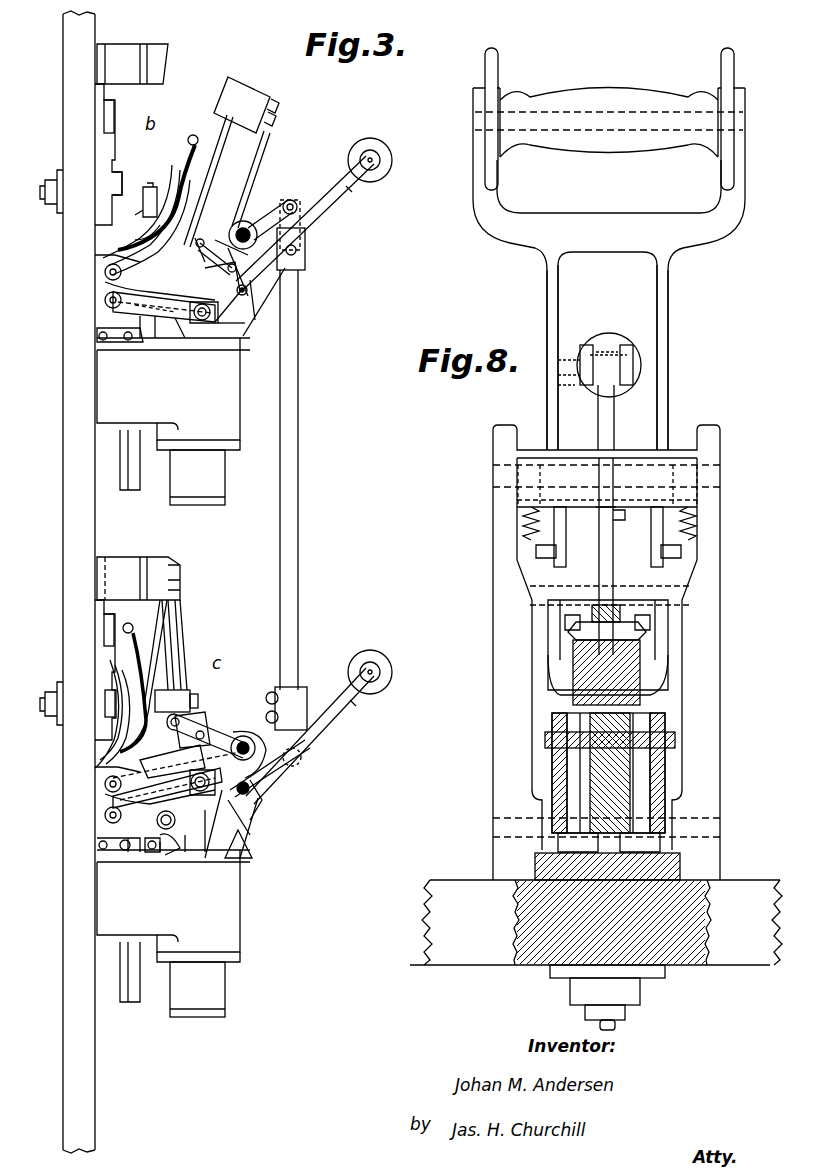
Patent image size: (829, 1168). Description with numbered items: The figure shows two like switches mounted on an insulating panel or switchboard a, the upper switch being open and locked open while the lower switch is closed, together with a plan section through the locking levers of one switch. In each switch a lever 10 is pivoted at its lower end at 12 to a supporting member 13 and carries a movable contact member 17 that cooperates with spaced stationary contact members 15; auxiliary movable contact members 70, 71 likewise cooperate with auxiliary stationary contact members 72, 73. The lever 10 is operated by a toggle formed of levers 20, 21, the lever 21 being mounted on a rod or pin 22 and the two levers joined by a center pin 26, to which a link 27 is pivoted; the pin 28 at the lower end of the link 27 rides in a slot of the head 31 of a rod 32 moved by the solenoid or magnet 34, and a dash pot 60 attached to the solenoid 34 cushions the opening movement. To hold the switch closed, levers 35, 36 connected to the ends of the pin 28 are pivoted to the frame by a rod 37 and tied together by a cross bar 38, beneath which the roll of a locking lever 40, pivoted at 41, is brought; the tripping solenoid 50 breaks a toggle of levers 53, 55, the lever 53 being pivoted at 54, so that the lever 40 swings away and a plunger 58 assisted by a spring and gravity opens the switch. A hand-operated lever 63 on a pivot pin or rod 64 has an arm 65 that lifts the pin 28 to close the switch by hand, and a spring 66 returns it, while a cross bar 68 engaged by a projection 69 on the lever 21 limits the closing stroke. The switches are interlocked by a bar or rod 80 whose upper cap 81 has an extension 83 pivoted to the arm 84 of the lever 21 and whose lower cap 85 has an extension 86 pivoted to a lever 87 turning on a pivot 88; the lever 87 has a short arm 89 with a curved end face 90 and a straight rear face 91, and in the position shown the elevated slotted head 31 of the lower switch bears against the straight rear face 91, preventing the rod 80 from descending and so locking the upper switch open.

In FIG. 3, the lever 10 is at (237, 162).
In FIG. 8, the lever 10 is at (575, 697).
In FIG. 3, the pivot 12 is at (105, 275).
In FIG. 8, the pivot 12 is at (720, 830).
In FIG. 3, the supporting member 13 is at (100, 296).
In FIG. 3, the stationary contact members 15 is at (95, 150).
In FIG. 3, the movable contact member 17 is at (170, 170).
In FIG. 8, the movable contact member 17 is at (552, 785).
In FIG. 3, the toggle lever 20 is at (205, 262).
In FIG. 8, the toggle lever 20 is at (570, 612).
In FIG. 3, the toggle lever 21 is at (235, 222).
In FIG. 8, the toggle lever 21 is at (599, 522).
In FIG. 3, the rod or pin 22 is at (246, 221).
In FIG. 8, the rod or pin 22 is at (493, 480).
In FIG. 3, the center pin 26 is at (207, 503).
In FIG. 8, the center pin 26 is at (650, 615).
In FIG. 3, the link 27 is at (200, 297).
In FIG. 3, the pin 28 is at (200, 327).
In FIG. 3, the slotted head 31 is at (190, 520).
In FIG. 8, the slotted head 31 is at (625, 558).
In FIG. 3, the rod 32 is at (170, 830).
In FIG. 3, the solenoid or magnet 34 is at (225, 405).
In FIG. 8, the lever 35 is at (545, 655).
In FIG. 3, the lever 36 is at (180, 345).
In FIG. 8, the lever 36 is at (672, 728).
In FIG. 3, the rod 37 is at (105, 310).
In FIG. 3, the cross bar 38 is at (167, 556).
In FIG. 8, the cross bar 38 is at (645, 712).
In FIG. 3, the locking lever 40 is at (150, 858).
In FIG. 3, the pivot 41 is at (158, 345).
In FIG. 3, the tripping solenoid 50 is at (105, 433).
In FIG. 3, the toggle lever 53 is at (113, 345).
In FIG. 3, the pivot 54 is at (98, 338).
In FIG. 3, the toggle lever 55 is at (143, 345).
In FIG. 3, the plunger 58 is at (115, 182).
In FIG. 8, the plunger 58 is at (540, 855).
In FIG. 3, the dash pot 60 is at (225, 472).
In FIG. 3, the hand-operated lever 63 is at (330, 200).
In FIG. 8, the hand-operated lever 63 is at (547, 307).
In FIG. 3, the pivot pin or rod 64 is at (245, 290).
In FIG. 3, the arm 65 is at (236, 325).
In FIG. 8, the arm 65 is at (560, 548).
In FIG. 8, the spring 66 is at (525, 530).
In FIG. 8, the cross bar 68 is at (690, 500).
In FIG. 8, the projection 69 is at (620, 515).
In FIG. 3, the auxiliary movable contact member 70 is at (222, 100).
In FIG. 3, the auxiliary movable contact member 71 is at (190, 135).
In FIG. 3, the auxiliary stationary contact member 72 is at (168, 72).
In FIG. 3, the auxiliary stationary contact member 73 is at (110, 104).
In FIG. 3, the bar or rod 80 is at (298, 522).
In FIG. 3, the cap 81 is at (305, 262).
In FIG. 8, the cap 81 is at (625, 395).
In FIG. 3, the extension 83 is at (292, 200).
In FIG. 8, the extension 83 is at (628, 345).
In FIG. 3, the arm 84 is at (272, 209).
In FIG. 8, the arm 84 is at (600, 421).
In FIG. 3, the cap 85 is at (307, 695).
In FIG. 3, the extension 86 is at (300, 750).
In FIG. 3, the lever 87 is at (249, 744).
In FIG. 3, the pivot 88 is at (184, 858).
In FIG. 3, the short arm 89 is at (254, 840).
In FIG. 3, the curved end face 90 is at (250, 858).
In FIG. 3, the straight rear face 91 is at (210, 858).
In FIG. 3, the panel or switchboard a is at (63, 540).